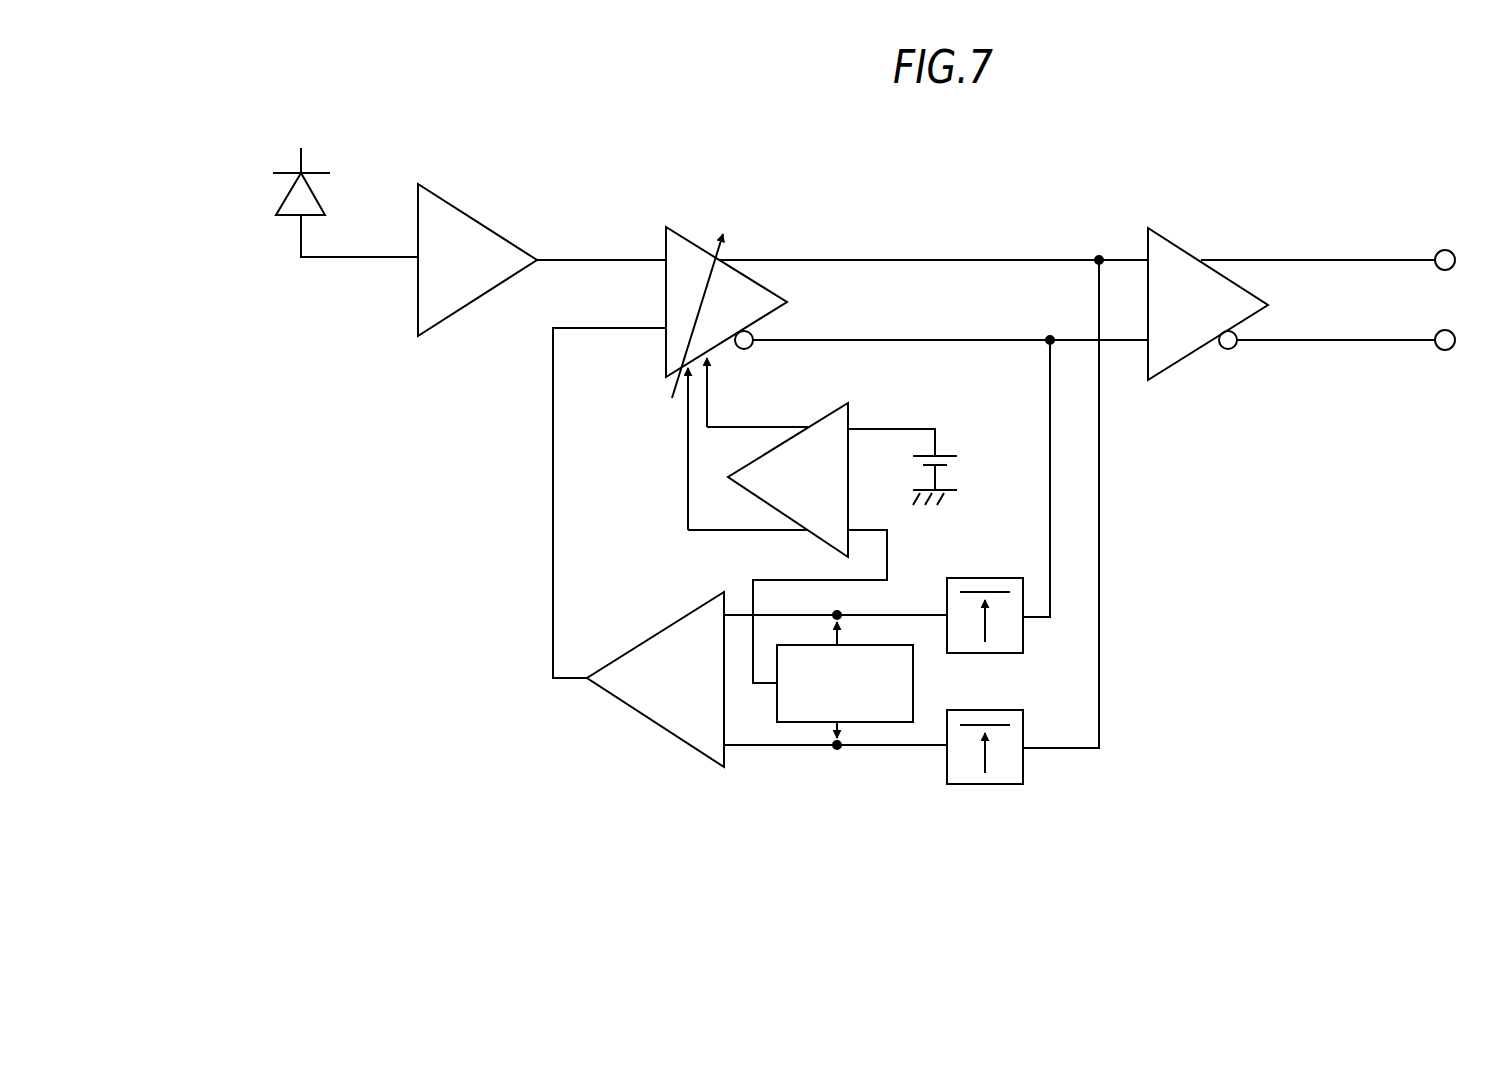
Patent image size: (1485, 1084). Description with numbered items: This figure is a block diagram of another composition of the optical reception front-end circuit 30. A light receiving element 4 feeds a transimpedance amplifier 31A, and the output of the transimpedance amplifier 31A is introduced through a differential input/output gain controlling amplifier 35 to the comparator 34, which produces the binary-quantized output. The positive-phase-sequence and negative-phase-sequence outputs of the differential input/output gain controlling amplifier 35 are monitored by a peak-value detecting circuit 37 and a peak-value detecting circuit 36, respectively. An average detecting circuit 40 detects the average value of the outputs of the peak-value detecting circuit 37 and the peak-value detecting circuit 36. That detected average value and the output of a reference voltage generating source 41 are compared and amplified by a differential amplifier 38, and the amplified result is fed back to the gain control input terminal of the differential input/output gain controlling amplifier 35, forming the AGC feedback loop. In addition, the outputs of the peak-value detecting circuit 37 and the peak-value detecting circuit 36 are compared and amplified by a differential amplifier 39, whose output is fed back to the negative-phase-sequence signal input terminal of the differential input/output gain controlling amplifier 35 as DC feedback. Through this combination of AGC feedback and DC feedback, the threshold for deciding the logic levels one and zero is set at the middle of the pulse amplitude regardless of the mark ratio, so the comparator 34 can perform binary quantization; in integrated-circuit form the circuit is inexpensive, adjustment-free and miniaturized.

The light receiving element 4 is at (289, 215).
The optical reception front-end circuit 30 is at (1203, 731).
The transimpedance amplifier 31A is at (418, 320).
The comparator 34 is at (1173, 245).
The differential input/output gain controlling amplifier 35 is at (684, 236).
The peak-value detecting circuit 36 is at (1023, 590).
The peak-value detecting circuit 37 is at (985, 784).
The differential amplifier 38 is at (848, 404).
The differential amplifier 39 is at (617, 702).
The average detecting circuit 40 is at (887, 722).
The reference voltage generating source 41 is at (957, 453).